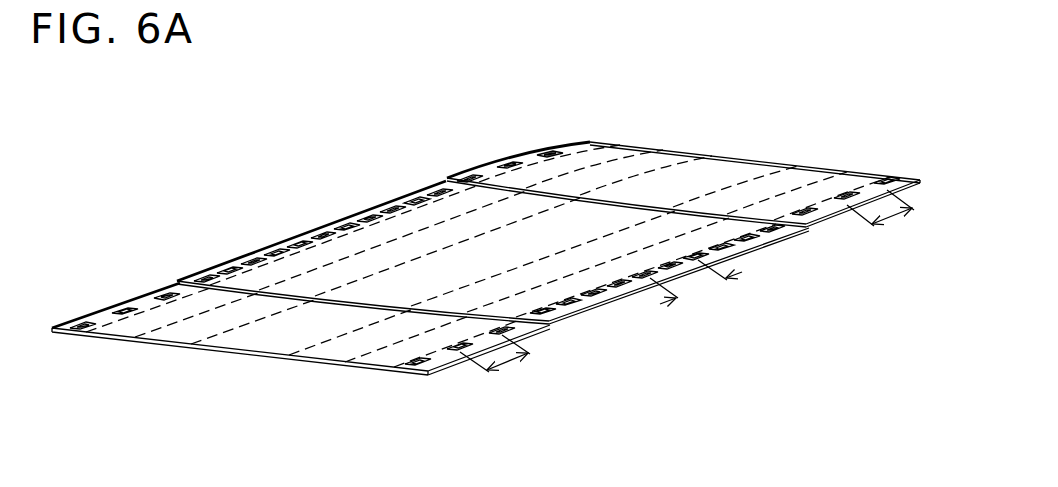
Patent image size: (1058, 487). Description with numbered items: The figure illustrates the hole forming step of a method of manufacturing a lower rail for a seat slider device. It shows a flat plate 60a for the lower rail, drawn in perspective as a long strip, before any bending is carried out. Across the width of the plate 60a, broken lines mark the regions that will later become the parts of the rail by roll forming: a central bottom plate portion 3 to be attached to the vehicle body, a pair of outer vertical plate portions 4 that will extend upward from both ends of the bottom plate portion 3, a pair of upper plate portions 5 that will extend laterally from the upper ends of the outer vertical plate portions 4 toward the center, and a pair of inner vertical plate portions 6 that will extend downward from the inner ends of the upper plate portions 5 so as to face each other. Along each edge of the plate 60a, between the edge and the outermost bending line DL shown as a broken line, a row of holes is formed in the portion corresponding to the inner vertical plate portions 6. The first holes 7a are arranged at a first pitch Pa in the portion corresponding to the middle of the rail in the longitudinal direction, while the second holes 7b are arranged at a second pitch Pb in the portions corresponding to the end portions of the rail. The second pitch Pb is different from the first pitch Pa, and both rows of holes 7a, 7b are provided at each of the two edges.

The flat plate 60a is at (718, 118).
The bottom plate portion 3 is at (242, 345).
The outer vertical plate portions 4 is at (163, 336).
The upper plate portions 5 is at (110, 336).
The inner vertical plate portions 6 is at (52, 332).
The first holes 7a is at (363, 218).
The second holes 7b is at (125, 305).
The bending line DL is at (594, 142).
The first pitch Pa is at (696, 287).
The second pitch Pb is at (697, 288).